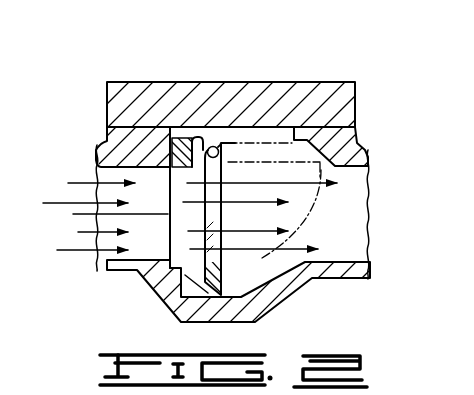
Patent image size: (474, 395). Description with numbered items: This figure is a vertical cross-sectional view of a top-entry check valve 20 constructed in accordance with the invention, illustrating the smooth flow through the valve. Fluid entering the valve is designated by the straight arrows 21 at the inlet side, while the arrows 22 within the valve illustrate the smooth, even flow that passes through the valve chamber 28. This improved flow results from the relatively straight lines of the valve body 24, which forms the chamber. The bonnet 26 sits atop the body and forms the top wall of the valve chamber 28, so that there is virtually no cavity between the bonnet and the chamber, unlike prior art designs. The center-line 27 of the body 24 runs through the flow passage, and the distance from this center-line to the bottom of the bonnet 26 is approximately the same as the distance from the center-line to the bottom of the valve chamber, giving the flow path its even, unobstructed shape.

The top-entry check valve 20 is at (106, 70).
The straight arrows 21 is at (93, 183).
The arrows 22 is at (265, 185).
The valve body 24 is at (109, 147).
The bonnet 26 is at (183, 97).
The center-line 27 is at (272, 215).
The valve chamber 28 is at (303, 198).